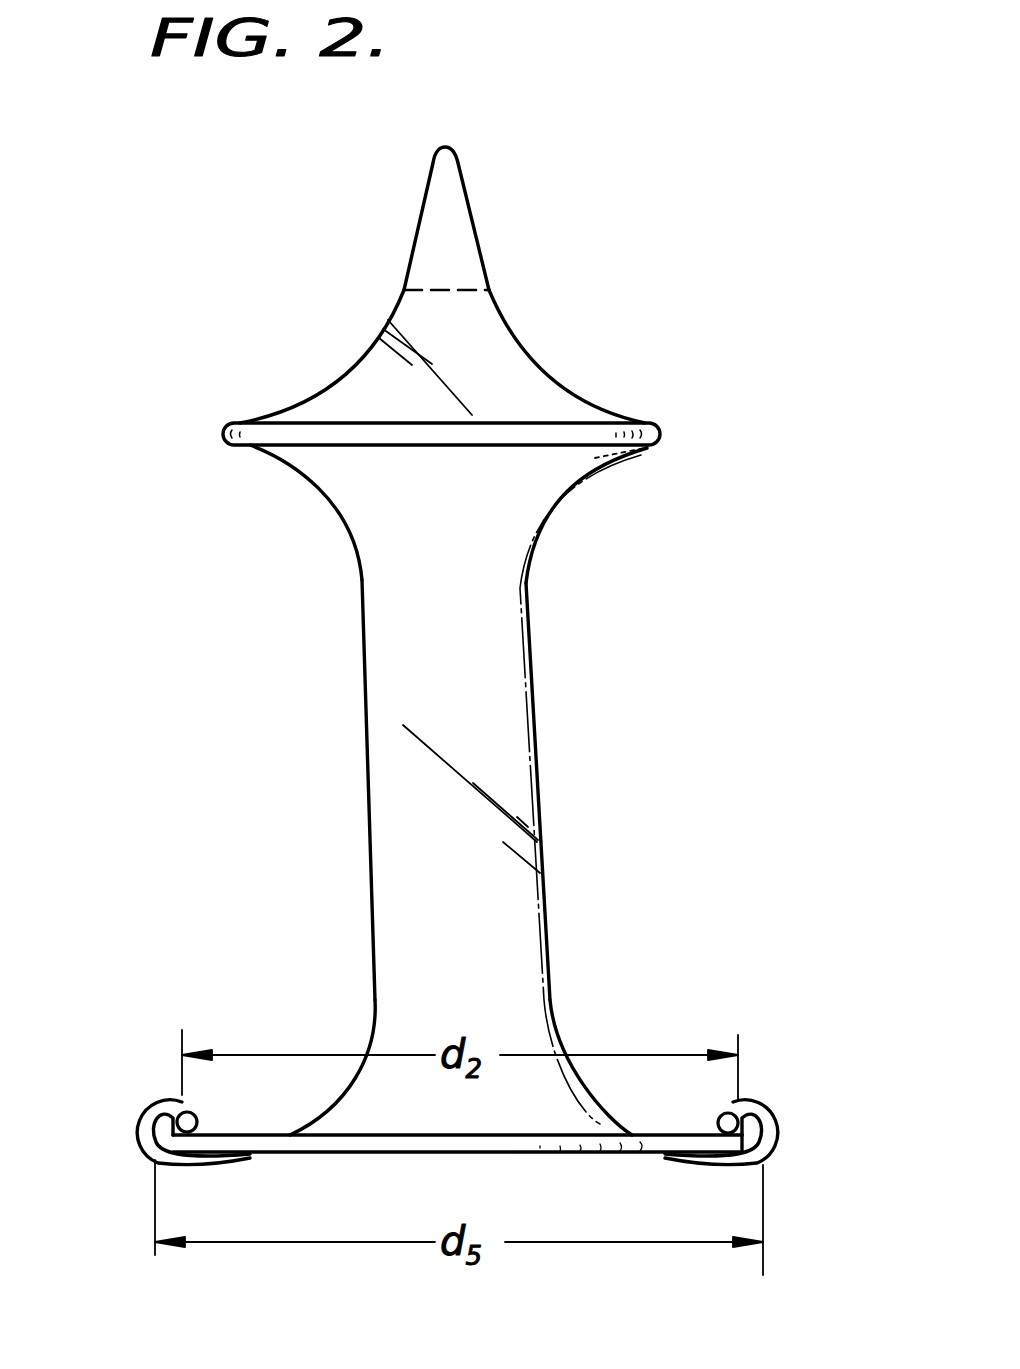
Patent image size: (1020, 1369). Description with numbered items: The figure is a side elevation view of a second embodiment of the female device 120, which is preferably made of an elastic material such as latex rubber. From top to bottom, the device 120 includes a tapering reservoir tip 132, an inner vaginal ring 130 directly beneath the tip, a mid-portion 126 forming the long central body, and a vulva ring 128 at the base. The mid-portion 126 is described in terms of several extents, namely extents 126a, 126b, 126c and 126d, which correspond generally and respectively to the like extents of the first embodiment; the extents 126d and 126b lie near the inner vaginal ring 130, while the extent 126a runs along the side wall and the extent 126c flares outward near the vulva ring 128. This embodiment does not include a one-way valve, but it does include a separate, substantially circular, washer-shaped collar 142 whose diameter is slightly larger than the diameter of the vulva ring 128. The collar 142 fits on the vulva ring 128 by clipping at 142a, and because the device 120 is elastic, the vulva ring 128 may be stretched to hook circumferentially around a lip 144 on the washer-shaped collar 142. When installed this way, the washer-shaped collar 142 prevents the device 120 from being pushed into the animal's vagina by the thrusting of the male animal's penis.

The female device 120 is at (663, 389).
The tapering reservoir tip 132 is at (455, 218).
The mid-portion extent 126d is at (335, 378).
The inner vaginal ring 130 is at (563, 435).
The mid-portion 126 is at (363, 709).
The mid-portion extent 126b is at (312, 488).
The mid-portion extent 126a is at (547, 905).
The mid-portion extent 126c is at (279, 1047).
The washer-shaped collar 142 is at (560, 1145).
The clipping location 142a is at (722, 1116).
The lip 144 is at (758, 1117).
The vulva ring 128 is at (765, 1135).